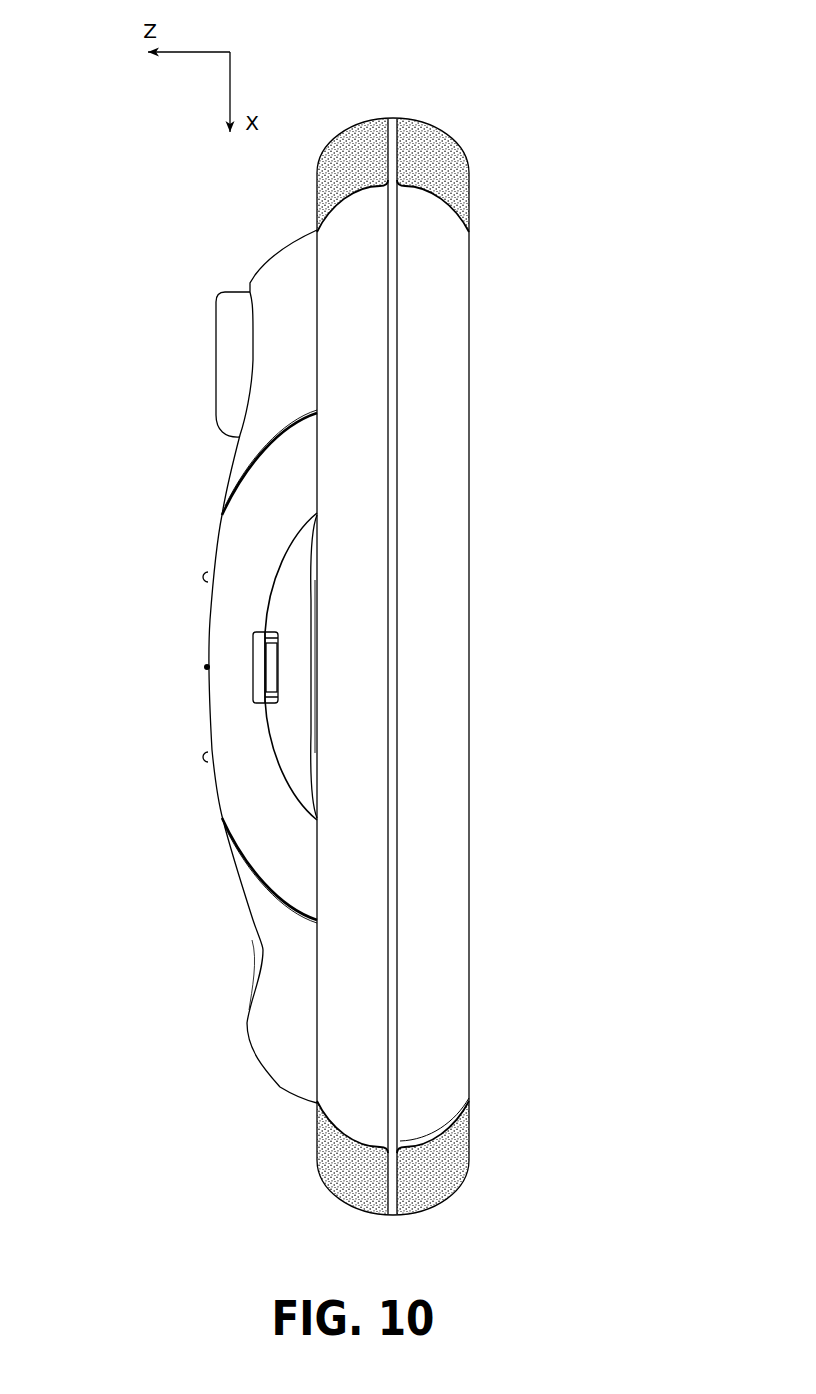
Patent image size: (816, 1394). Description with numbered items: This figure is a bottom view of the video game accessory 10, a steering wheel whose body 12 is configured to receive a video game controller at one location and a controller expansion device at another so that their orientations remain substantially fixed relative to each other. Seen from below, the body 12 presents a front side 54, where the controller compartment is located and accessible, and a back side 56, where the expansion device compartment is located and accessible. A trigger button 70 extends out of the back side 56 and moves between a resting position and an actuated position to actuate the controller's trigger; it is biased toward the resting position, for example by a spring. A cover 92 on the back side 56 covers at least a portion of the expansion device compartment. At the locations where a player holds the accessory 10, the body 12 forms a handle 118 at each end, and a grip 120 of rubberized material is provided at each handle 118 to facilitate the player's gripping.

The video game accessory 10 is at (182, 202).
The body 12 is at (470, 818).
The front side 54 is at (487, 603).
The back side 56 is at (175, 677).
The trigger button 70 is at (226, 377).
The cover 92 is at (230, 608).
The handle 118 is at (462, 123).
The grip 120 is at (355, 148).